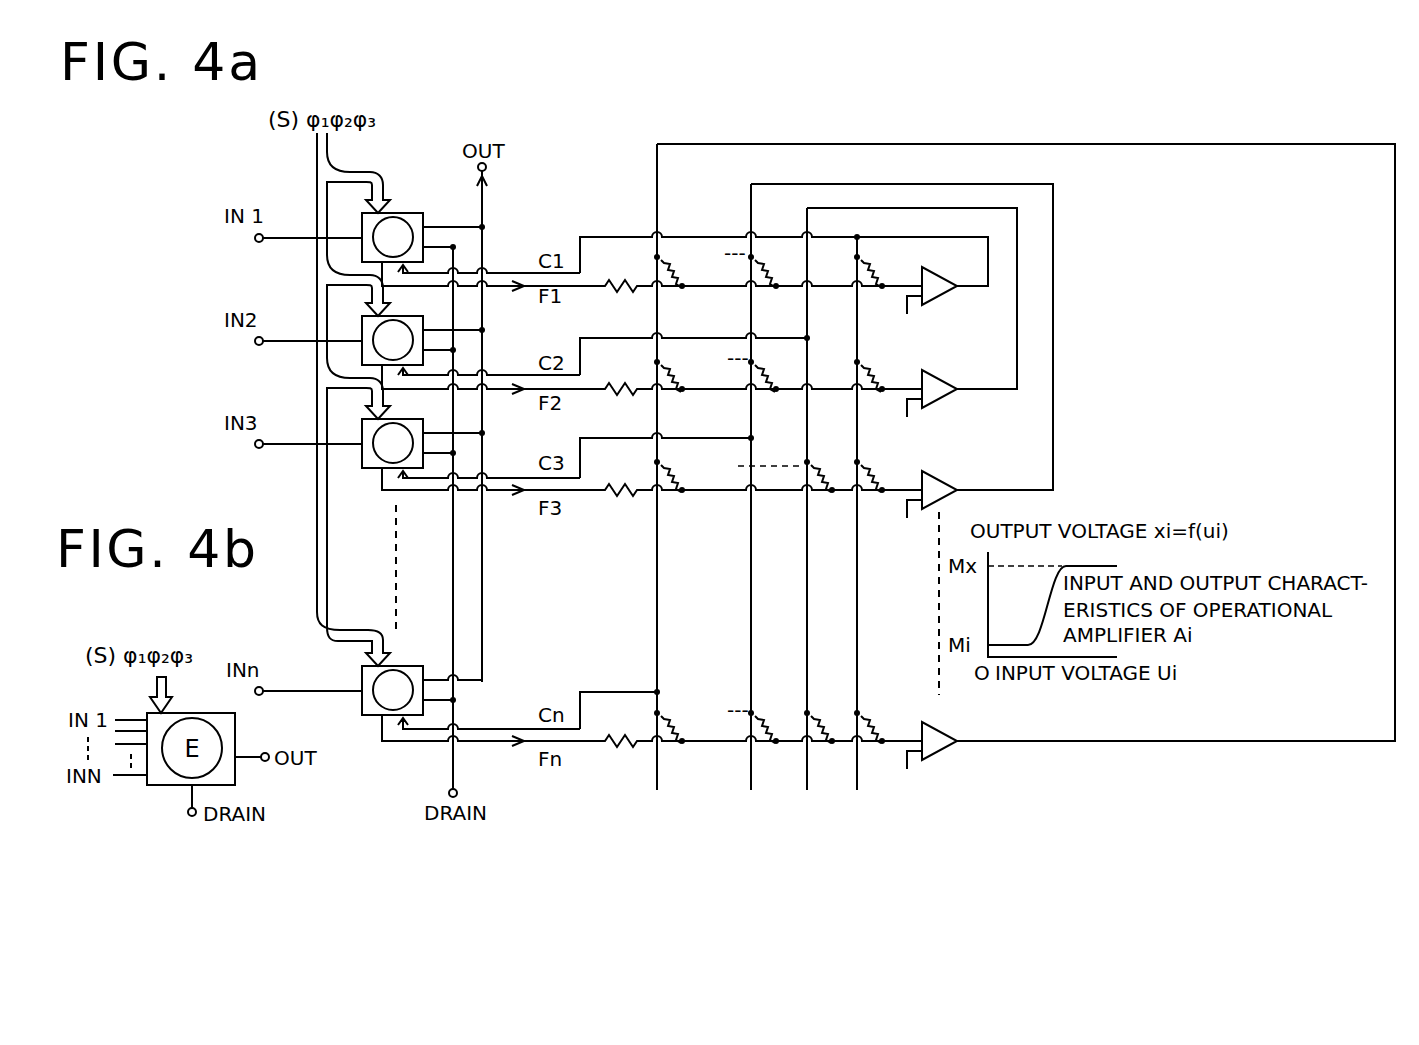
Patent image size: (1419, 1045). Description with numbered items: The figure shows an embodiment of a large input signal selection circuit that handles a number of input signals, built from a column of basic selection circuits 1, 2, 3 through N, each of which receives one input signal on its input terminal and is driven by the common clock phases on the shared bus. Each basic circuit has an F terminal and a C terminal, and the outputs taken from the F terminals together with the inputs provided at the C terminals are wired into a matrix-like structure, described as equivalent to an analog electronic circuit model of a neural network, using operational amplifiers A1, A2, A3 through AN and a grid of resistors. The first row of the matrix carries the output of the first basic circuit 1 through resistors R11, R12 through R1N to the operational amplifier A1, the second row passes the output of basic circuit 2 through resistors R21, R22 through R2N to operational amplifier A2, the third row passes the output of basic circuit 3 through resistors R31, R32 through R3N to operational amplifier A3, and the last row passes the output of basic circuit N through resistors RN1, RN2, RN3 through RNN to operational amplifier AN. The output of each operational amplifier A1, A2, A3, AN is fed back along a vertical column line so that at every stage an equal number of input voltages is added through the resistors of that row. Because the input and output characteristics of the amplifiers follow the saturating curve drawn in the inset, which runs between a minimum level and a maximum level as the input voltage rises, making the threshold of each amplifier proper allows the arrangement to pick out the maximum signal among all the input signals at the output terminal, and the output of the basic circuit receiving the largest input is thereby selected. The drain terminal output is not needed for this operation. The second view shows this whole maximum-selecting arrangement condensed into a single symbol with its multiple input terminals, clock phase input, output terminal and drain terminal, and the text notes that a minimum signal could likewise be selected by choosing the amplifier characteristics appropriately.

The basic circuit 1 is at (394, 213).
The basic circuit 2 is at (397, 316).
The basic circuit 3 is at (397, 419).
The basic circuit N is at (395, 666).
The operational amplifier A1 is at (935, 274).
The operational amplifier A2 is at (935, 377).
The operational amplifier A3 is at (935, 478).
The operational amplifier AN is at (940, 729).
The resistor R1N is at (686, 266).
The resistor R12 is at (779, 266).
The resistor R11 is at (852, 266).
The resistor R2N is at (687, 370).
The resistor R22 is at (776, 370).
The resistor R21 is at (884, 370).
The resistor R3N is at (686, 472).
The resistor R32 is at (826, 463).
The resistor R31 is at (877, 463).
The resistor RNN is at (685, 722).
The resistor RN3 is at (775, 722).
The resistor RN2 is at (829, 722).
The resistor RN1 is at (882, 722).